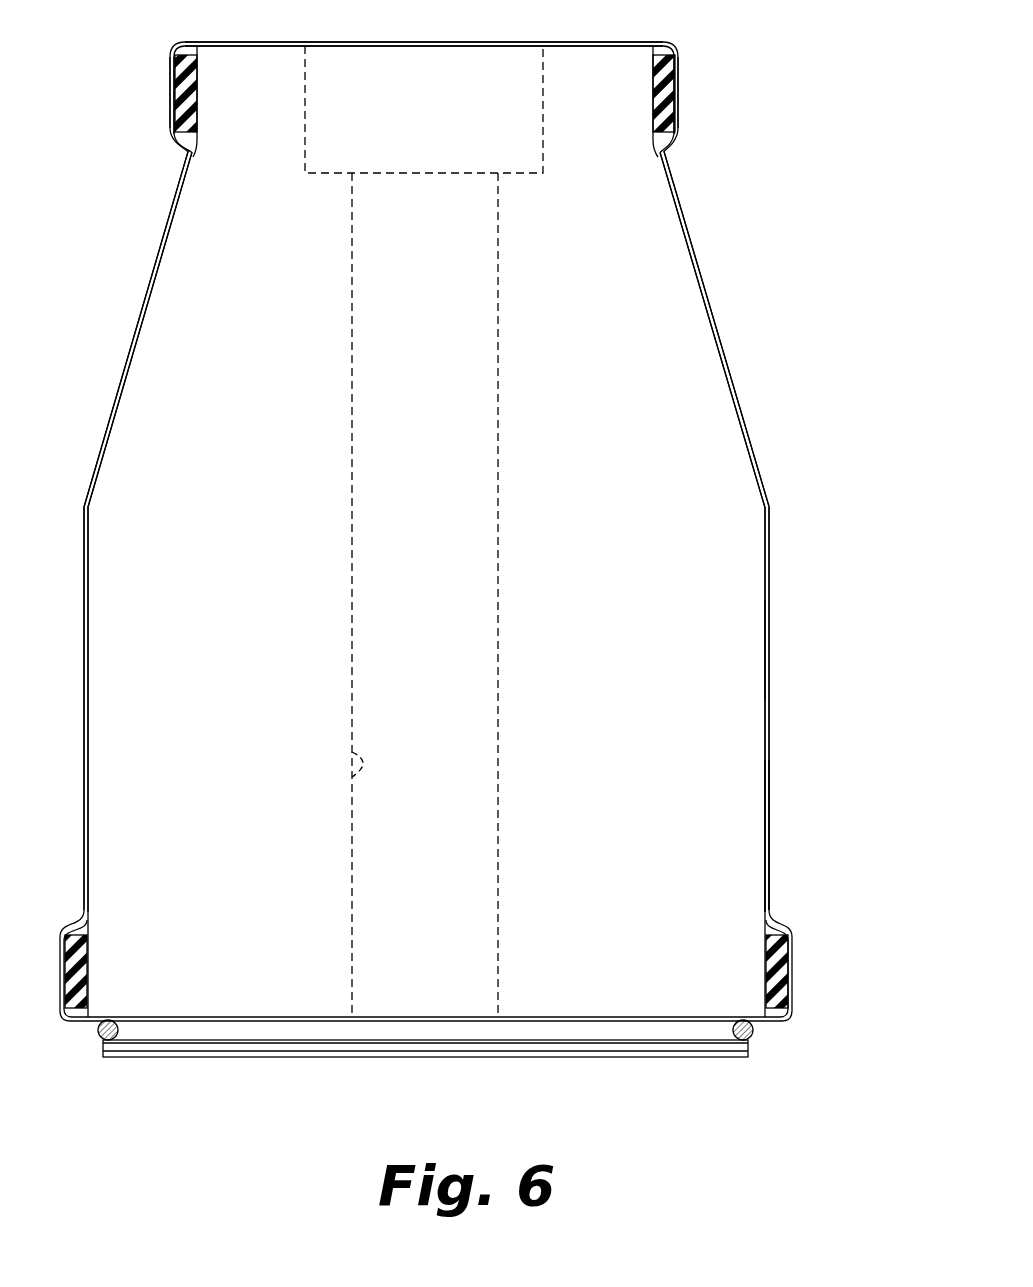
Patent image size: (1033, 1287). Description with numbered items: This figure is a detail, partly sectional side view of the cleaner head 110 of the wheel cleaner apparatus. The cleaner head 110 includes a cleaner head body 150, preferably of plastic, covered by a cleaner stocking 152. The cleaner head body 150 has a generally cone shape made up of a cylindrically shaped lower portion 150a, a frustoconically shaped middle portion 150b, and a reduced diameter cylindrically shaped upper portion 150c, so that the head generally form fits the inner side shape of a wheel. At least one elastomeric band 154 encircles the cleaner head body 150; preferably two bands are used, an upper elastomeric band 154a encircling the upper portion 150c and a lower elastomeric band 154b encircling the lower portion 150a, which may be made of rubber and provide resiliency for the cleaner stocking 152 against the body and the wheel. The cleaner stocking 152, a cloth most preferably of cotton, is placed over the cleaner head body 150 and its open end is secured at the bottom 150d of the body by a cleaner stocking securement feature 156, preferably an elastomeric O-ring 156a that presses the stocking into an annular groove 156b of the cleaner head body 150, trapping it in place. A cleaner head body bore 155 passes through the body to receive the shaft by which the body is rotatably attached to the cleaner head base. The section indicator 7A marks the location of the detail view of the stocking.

The cleaner head 110 is at (438, 598).
The cleaner head body 150 is at (737, 797).
The lower portion 150a is at (732, 877).
The middle portion 150b is at (662, 355).
The upper portion 150c is at (615, 98).
The bottom 150d is at (368, 1058).
The cleaner stocking 152 is at (770, 606).
The elastomeric band 154 is at (178, 90).
The upper elastomeric band 154a is at (180, 108).
The lower elastomeric band 154b is at (62, 938).
The cleaner head body bore 155 is at (352, 752).
The cleaner stocking securement feature 156 is at (457, 1081).
The elastomeric O-ring 156a is at (112, 1043).
The annular groove 156b is at (285, 1046).
The section view 7A is at (771, 665).